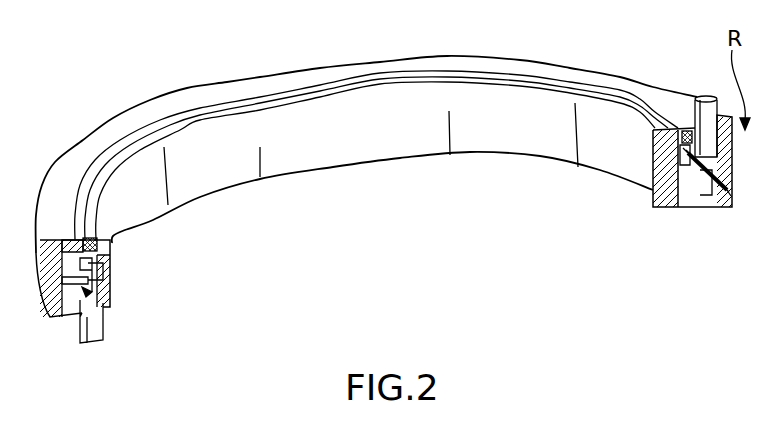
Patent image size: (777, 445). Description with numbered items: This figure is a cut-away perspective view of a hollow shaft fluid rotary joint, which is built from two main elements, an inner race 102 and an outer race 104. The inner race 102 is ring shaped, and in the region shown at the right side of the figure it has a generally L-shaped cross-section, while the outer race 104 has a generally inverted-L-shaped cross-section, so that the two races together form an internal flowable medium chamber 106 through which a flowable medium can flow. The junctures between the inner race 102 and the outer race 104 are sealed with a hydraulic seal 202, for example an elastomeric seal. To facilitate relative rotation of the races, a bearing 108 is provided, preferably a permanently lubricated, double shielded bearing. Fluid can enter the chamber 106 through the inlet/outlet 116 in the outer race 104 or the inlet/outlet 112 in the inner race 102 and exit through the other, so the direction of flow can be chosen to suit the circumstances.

The inner race 102 is at (217, 173).
The outer race 104 is at (150, 115).
The flowable medium chamber 106 is at (93, 291).
The bearing 108 is at (78, 212).
The inlet/outlet 112 is at (85, 343).
The inlet/outlet 116 is at (712, 97).
The hydraulic seal 202 is at (672, 180).